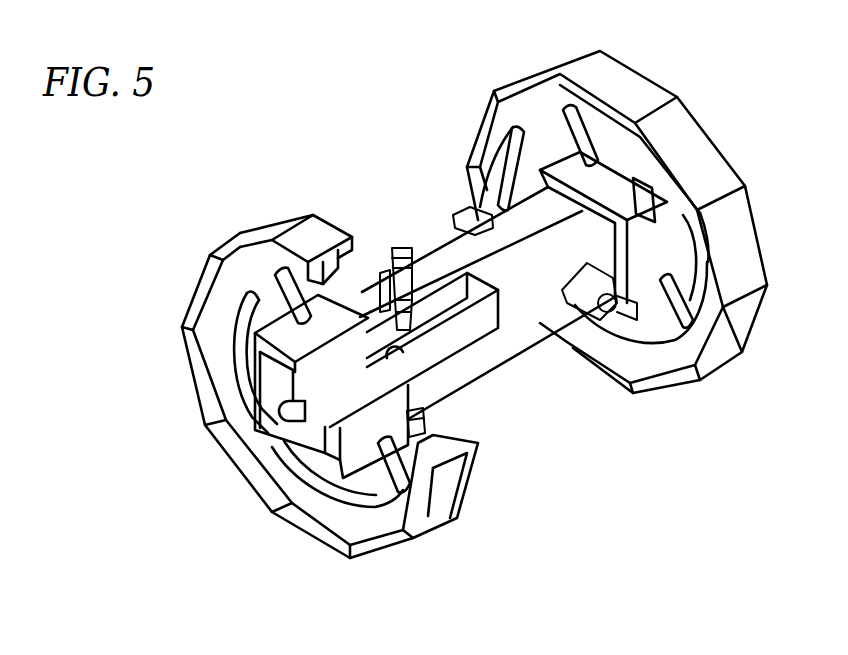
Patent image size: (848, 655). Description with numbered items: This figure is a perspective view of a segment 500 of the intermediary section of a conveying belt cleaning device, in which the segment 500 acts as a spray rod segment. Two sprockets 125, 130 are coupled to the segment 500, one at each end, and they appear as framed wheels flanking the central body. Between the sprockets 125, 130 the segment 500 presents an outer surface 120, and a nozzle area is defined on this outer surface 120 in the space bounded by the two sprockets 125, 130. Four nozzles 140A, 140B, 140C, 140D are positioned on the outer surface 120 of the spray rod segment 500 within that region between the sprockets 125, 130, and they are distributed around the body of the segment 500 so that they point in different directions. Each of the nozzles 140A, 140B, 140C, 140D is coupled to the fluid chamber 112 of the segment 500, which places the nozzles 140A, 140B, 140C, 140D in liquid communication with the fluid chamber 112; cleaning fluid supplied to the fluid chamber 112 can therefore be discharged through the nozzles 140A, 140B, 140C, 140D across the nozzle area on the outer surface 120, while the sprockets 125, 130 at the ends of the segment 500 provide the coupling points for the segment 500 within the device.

The segment 500 is at (389, 112).
The fluid chamber 112 is at (287, 405).
The outer surface 120 is at (477, 380).
The sprocket 125 is at (298, 214).
The sprocket 130 is at (563, 57).
The nozzle 140A is at (402, 246).
The nozzle 140B is at (463, 210).
The nozzle 140C is at (430, 417).
The nozzle 140D is at (573, 330).